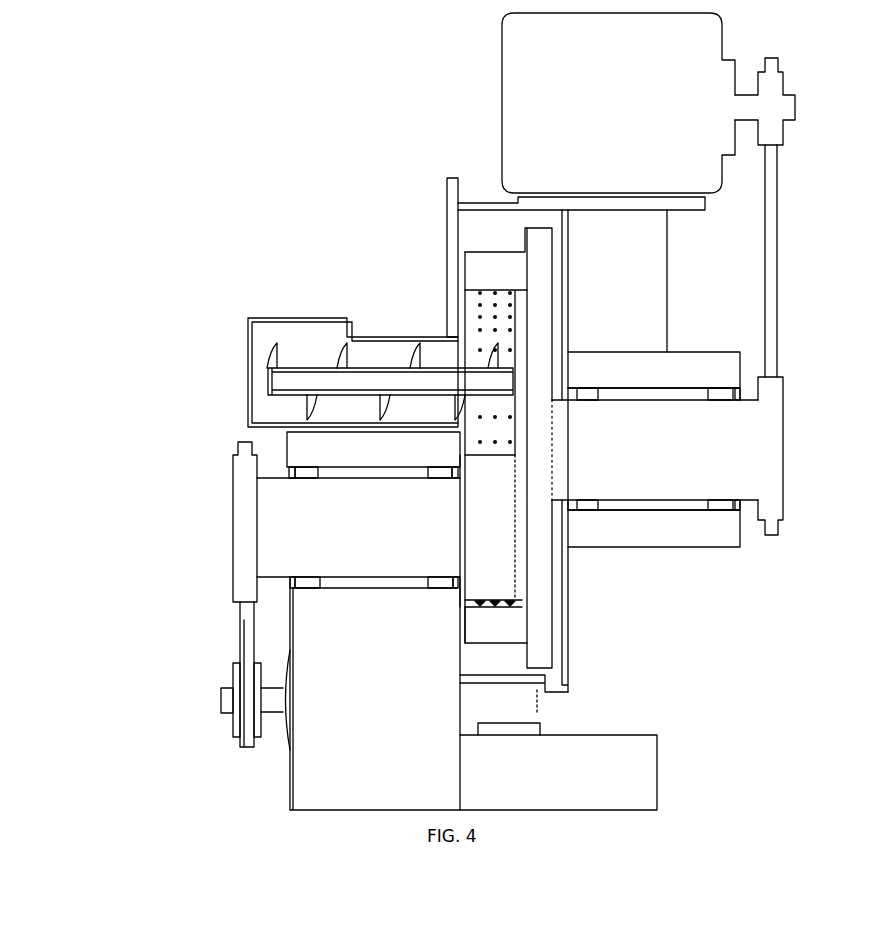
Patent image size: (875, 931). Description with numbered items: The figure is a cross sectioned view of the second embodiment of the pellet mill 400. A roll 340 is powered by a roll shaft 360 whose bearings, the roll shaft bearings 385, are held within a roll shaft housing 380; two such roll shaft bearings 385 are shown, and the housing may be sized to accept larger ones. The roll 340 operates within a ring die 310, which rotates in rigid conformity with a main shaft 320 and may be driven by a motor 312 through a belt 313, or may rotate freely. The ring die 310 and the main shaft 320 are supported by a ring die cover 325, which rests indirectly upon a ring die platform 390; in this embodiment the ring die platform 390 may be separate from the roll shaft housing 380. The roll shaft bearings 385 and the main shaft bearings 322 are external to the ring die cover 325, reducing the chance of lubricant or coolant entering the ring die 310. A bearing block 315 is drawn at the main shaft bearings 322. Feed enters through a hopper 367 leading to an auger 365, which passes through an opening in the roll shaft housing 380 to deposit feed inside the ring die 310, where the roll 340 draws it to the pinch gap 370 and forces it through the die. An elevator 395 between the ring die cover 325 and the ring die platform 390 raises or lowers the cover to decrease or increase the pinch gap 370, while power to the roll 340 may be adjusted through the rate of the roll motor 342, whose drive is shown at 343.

The pellet mill 400 is at (180, 158).
The motor 312 is at (619, 114).
The belt 313 is at (771, 250).
The ring die cover 325 is at (483, 203).
The roll shaft housing 380 is at (452, 248).
The ring die 310 is at (509, 278).
The main shaft 320 is at (665, 461).
The bearing block 315 is at (629, 378).
The main shaft bearings 322 is at (587, 400).
The hopper 367 is at (280, 327).
The auger 365 is at (283, 381).
The roll shaft 360 is at (384, 531).
The roll shaft bearings 385 is at (305, 580).
The roll 340 is at (501, 531).
The pinch gap 370 is at (520, 603).
The elevator 395 is at (509, 712).
The ring die platform 390 is at (546, 781).
The pulley 343 is at (246, 638).
The roll motor 342 is at (283, 722).